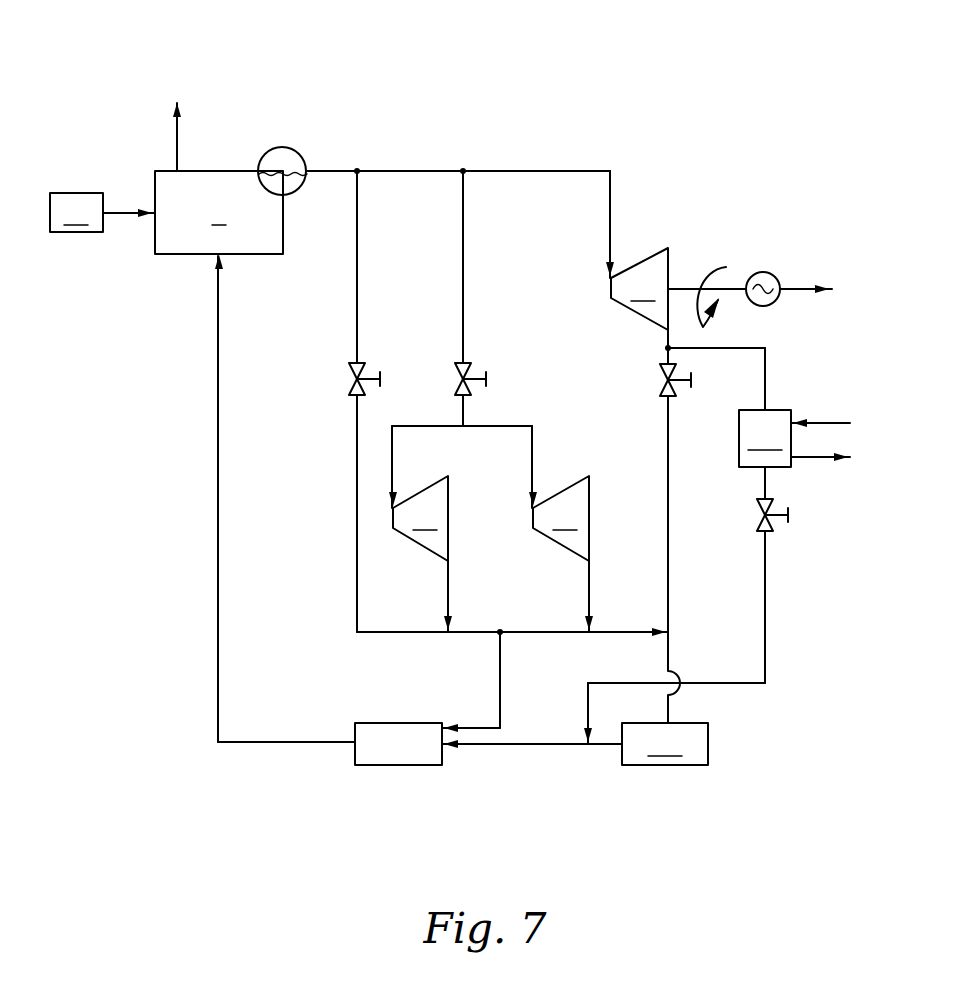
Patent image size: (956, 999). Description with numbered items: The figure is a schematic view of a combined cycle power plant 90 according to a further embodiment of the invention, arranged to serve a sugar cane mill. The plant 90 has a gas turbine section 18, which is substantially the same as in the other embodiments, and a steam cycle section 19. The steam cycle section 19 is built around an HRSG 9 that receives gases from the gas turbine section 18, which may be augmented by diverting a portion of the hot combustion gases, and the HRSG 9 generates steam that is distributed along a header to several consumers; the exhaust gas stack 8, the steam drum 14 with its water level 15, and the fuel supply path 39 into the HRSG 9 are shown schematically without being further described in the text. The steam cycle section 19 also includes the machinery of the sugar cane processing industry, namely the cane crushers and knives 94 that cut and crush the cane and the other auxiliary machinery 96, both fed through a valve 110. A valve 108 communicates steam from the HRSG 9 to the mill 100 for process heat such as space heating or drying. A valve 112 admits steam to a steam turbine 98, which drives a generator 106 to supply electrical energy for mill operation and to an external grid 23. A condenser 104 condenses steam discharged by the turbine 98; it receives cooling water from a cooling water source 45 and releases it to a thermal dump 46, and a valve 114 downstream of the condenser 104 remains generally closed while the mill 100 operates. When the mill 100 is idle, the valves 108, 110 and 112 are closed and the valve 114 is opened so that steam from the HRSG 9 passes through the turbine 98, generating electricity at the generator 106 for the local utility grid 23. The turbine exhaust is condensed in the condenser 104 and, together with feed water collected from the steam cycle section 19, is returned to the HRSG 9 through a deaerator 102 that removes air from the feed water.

The combined cycle power plant 90 is at (721, 55).
The steam cycle section 19 is at (416, 138).
The gas turbine section 18 is at (76, 212).
The fuel feed line 39 is at (121, 215).
The HRSG 9 is at (219, 212).
The flue gas exhaust 8 is at (177, 138).
The steam drum 14 is at (299, 151).
The water level 15 is at (299, 190).
The valve 108 is at (362, 364).
The valve 110 is at (468, 364).
The valve 112 is at (662, 364).
The valve 114 is at (770, 500).
The cane crushers and knives 94 is at (420, 518).
The auxiliary machinery 96 is at (561, 518).
The steam turbine 98 is at (639, 289).
The generator 106 is at (763, 272).
The external grid 23 is at (820, 289).
The condenser 104 is at (765, 438).
The cooling water source 45 is at (835, 423).
The thermal dump 46 is at (835, 457).
The mill 100 is at (665, 744).
The deaerator 102 is at (398, 744).